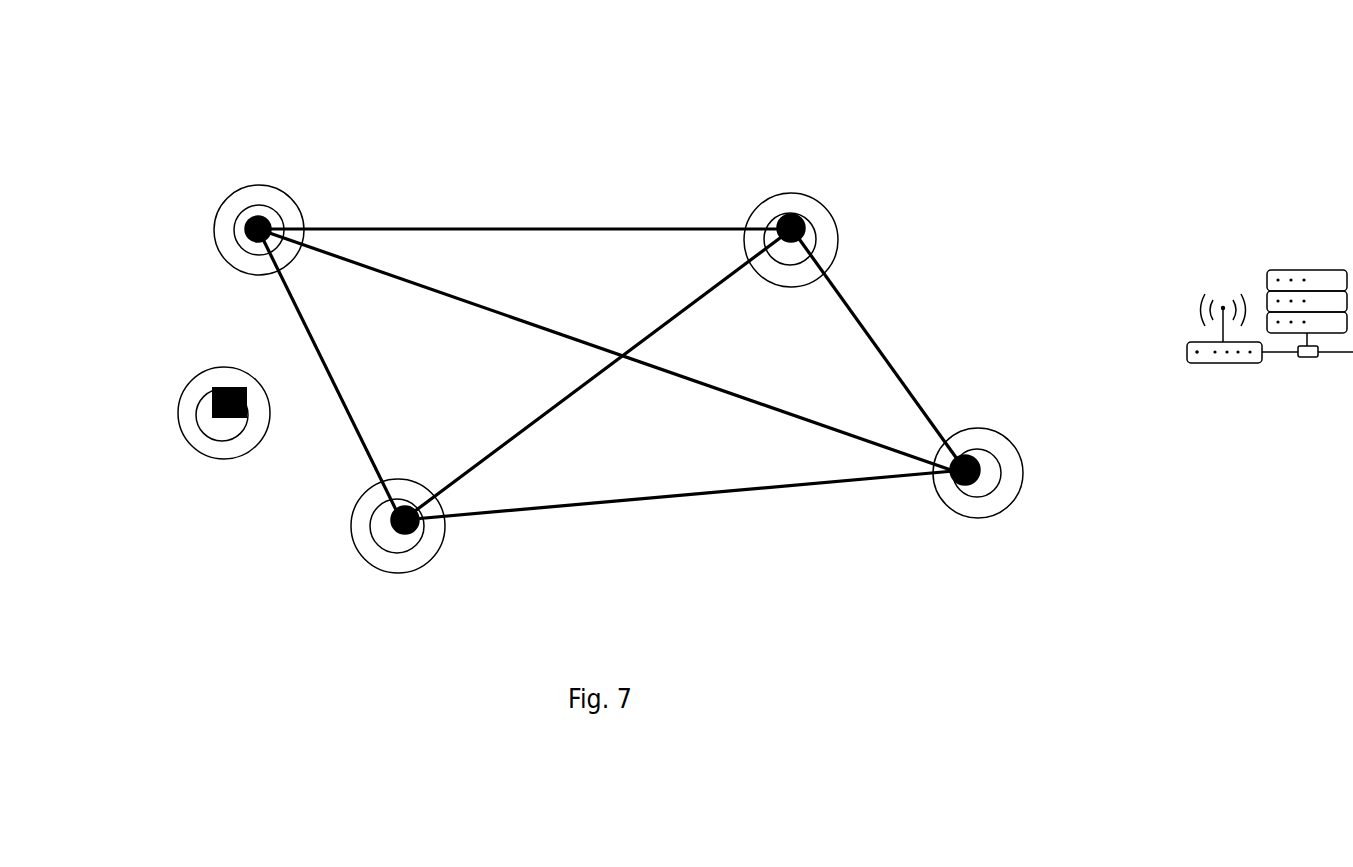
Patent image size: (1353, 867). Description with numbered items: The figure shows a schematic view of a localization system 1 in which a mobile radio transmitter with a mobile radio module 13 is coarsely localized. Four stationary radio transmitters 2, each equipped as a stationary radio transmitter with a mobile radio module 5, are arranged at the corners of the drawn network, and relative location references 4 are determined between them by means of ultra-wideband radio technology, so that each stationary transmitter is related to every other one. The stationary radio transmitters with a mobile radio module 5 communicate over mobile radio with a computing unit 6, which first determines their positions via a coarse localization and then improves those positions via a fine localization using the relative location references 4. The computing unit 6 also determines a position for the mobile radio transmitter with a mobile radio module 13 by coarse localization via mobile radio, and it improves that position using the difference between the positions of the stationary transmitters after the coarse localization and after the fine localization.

The localization system 1 is at (1100, 153).
The stationary radio transmitter 2 is at (650, 349).
The stationary radio transmitter with a mobile radio module 5 is at (248, 213).
The relative location reference 4 is at (720, 277).
The computing unit 6 is at (1307, 250).
The mobile radio transmitter with a mobile radio module 13 is at (247, 420).